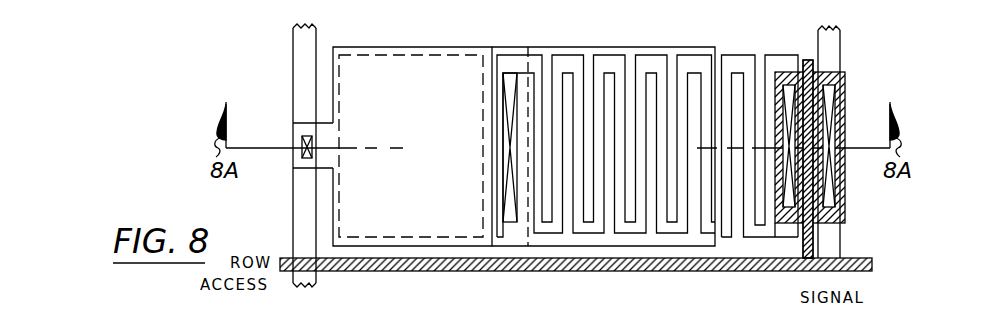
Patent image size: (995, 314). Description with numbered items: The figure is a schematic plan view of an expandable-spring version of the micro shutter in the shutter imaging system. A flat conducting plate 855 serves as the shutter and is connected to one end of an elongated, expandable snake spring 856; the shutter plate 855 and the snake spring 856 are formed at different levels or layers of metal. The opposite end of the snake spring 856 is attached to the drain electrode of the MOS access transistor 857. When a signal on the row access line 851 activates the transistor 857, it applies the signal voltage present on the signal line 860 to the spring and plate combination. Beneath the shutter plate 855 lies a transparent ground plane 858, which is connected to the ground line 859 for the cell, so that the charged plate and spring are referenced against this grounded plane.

The row access line 851 is at (390, 272).
The flat conducting plate 855 is at (630, 47).
The expandable spring 856 is at (693, 57).
The MOS access transistor 857 is at (808, 60).
The transparent ground plane 858 is at (378, 48).
The ground line 859 is at (293, 63).
The signal line 860 is at (830, 47).